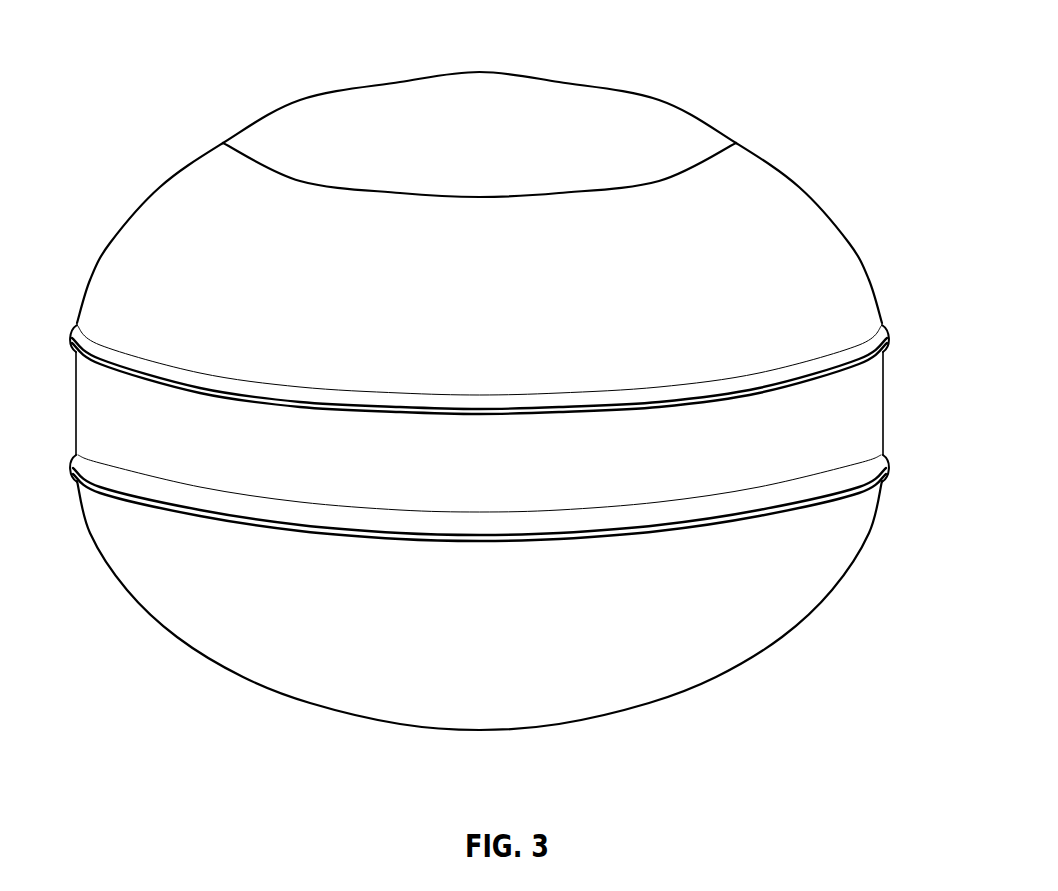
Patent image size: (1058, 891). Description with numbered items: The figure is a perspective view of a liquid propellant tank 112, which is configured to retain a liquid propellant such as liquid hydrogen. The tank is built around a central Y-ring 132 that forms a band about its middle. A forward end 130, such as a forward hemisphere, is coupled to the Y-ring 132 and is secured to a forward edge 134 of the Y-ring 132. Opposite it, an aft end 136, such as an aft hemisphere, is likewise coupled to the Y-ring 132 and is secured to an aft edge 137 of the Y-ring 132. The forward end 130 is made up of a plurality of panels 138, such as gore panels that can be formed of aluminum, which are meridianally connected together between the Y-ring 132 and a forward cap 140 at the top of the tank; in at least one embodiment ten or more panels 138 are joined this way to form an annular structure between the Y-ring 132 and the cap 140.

The liquid propellant tank 112 is at (134, 100).
The forward end 130 is at (846, 214).
The central Y-ring 132 is at (884, 395).
The forward edge 134 is at (890, 337).
The aft end 136 is at (857, 566).
The aft edge 137 is at (890, 465).
The panels 138 is at (110, 241).
The forward cap 140 is at (664, 115).